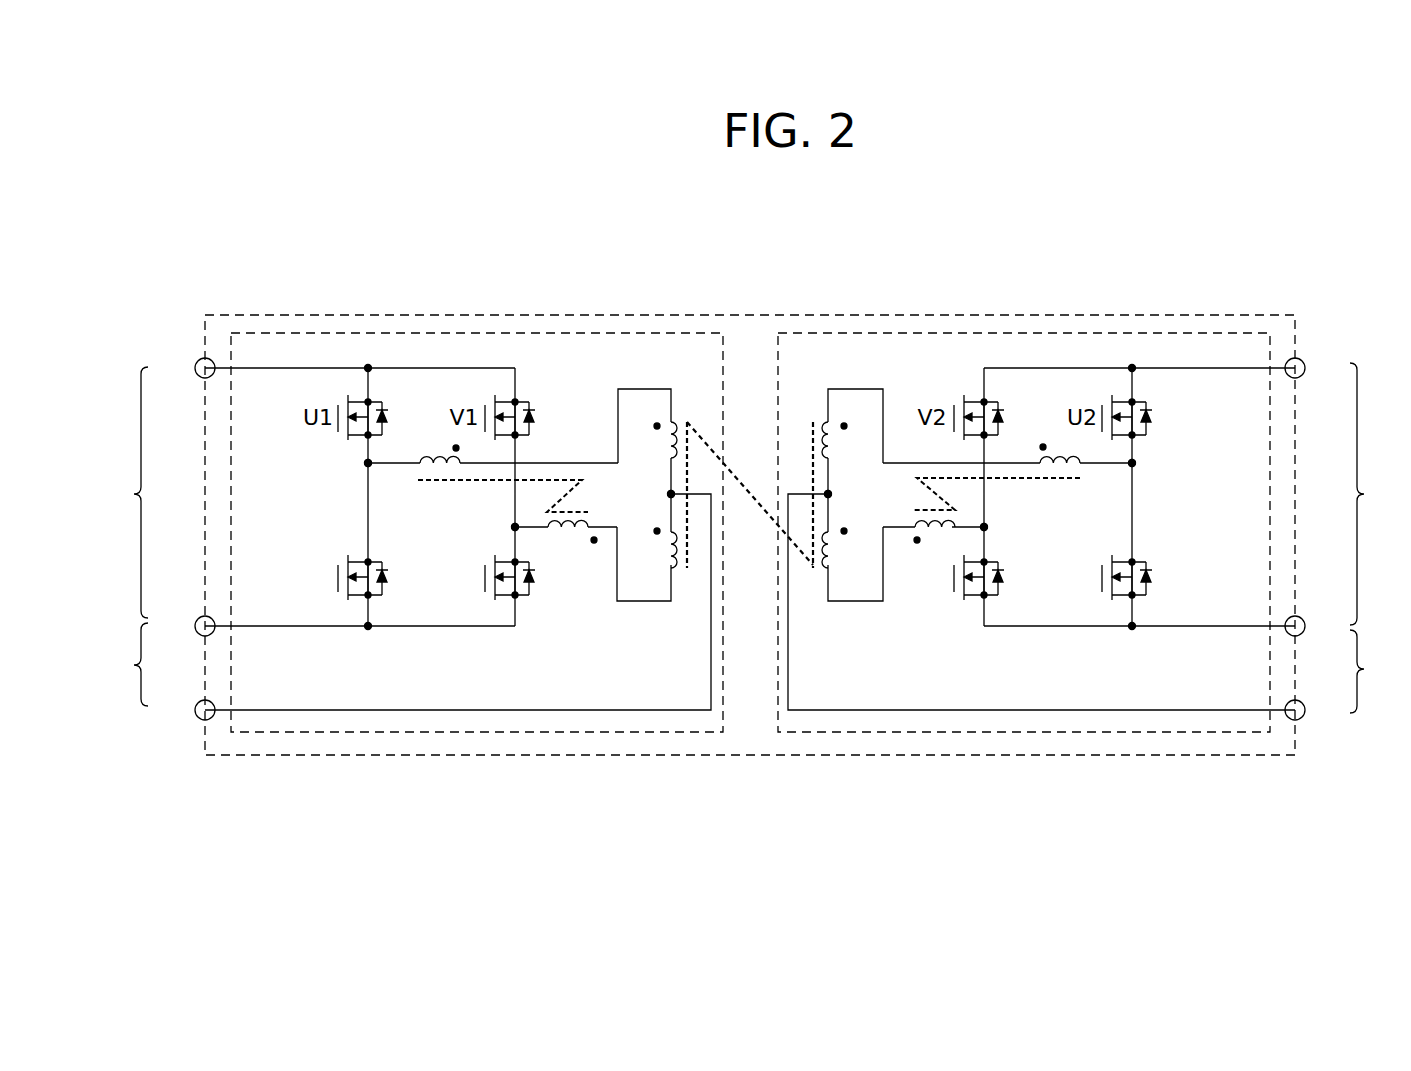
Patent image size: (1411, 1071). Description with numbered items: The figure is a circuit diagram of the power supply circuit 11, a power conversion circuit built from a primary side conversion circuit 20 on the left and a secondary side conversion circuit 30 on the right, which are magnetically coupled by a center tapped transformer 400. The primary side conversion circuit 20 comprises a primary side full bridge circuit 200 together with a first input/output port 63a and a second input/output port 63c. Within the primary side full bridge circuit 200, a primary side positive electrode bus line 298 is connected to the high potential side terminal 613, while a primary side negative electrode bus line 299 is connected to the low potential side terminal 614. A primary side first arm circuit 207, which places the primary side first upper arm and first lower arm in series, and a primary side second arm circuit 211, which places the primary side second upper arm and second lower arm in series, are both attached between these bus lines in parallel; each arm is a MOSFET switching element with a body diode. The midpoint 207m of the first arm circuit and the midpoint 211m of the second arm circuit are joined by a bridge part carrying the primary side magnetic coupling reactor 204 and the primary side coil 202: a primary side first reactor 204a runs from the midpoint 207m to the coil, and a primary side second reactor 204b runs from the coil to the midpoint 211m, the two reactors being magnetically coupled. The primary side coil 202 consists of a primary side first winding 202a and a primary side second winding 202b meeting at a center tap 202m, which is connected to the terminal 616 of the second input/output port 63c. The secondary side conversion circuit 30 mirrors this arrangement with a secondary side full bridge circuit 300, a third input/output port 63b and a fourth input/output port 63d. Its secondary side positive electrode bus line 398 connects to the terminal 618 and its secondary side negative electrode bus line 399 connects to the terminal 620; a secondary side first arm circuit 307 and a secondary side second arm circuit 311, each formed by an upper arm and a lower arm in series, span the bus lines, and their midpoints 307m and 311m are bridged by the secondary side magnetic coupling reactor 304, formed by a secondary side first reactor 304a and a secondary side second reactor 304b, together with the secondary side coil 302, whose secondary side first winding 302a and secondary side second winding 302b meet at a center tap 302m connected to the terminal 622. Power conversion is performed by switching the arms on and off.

The power supply circuit 11 is at (1168, 314).
The primary side conversion circuit 20 is at (465, 312).
The secondary side conversion circuit 30 is at (1034, 312).
The primary side full bridge circuit 200 is at (565, 333).
The secondary side full bridge circuit 300 is at (935, 333).
The primary side coil 202 is at (637, 459).
The primary side first winding 202a is at (660, 432).
The primary side second winding 202b is at (661, 558).
The center tap 202m is at (668, 494).
The primary side magnetic coupling reactor 204 is at (493, 503).
The primary side first reactor 204a is at (427, 457).
The primary side second reactor 204b is at (584, 537).
The primary side first arm circuit 207 is at (352, 620).
The midpoint 207m is at (366, 463).
The primary side second arm circuit 211 is at (497, 620).
The midpoint 211m is at (513, 528).
The primary side positive electrode bus line 298 is at (307, 367).
The primary side negative electrode bus line 299 is at (300, 630).
The secondary side coil 302 is at (863, 459).
The secondary side first winding 302a is at (842, 432).
The secondary side second winding 302b is at (838, 558).
The center tap 302m is at (831, 494).
The secondary side magnetic coupling reactor 304 is at (1004, 515).
The secondary side first reactor 304a is at (1050, 457).
The secondary side second reactor 304b is at (935, 540).
The secondary side first arm circuit 307 is at (1098, 620).
The midpoint 307m is at (1135, 463).
The secondary side second arm circuit 311 is at (958, 620).
The midpoint 311m is at (988, 527).
The secondary side positive electrode bus line 398 is at (1160, 368).
The secondary side negative electrode bus line 399 is at (1186, 630).
The transformer 400 is at (752, 452).
The terminal 613 is at (197, 361).
The terminal 614 is at (198, 617).
The terminal 616 is at (197, 716).
The terminal 618 is at (1303, 361).
The terminal 620 is at (1302, 618).
The terminal 622 is at (1303, 717).
The first input/output port 63a is at (116, 492).
The third input/output port 63b is at (1380, 494).
The second input/output port 63c is at (116, 664).
The fourth input/output port 63d is at (1380, 671).